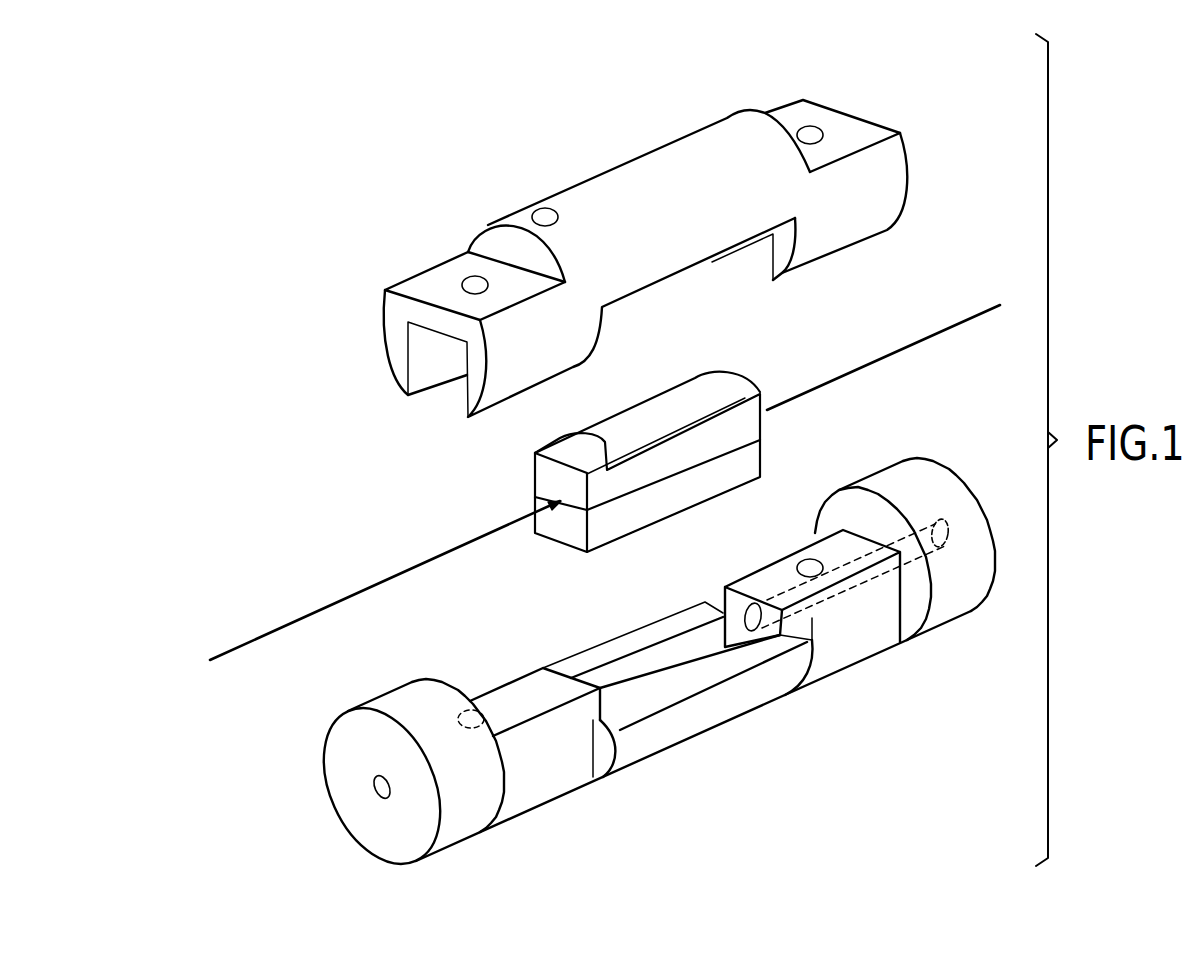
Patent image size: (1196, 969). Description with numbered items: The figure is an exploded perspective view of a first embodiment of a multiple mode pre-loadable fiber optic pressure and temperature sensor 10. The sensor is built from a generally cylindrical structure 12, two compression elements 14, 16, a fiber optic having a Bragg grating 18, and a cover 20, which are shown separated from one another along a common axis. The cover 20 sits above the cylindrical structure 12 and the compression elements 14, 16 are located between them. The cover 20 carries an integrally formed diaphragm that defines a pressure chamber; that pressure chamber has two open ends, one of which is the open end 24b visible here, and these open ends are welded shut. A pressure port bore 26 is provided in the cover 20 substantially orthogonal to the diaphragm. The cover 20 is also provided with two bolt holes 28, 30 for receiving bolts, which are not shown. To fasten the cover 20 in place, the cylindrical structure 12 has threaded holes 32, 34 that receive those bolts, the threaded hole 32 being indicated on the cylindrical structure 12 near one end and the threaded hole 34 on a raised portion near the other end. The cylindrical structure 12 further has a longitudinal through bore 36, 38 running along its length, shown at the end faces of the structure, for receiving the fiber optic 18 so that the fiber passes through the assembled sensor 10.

The multiple mode pre-loadable fiber optic pressure and temperature sensor 10 is at (509, 89).
The cylindrical structure 12 is at (823, 680).
The compression element 14 is at (685, 392).
The compression element 16 is at (748, 460).
The fiber optic having a Bragg grating 18 is at (302, 617).
The cover 20 is at (700, 146).
The open end of the pressure chamber 24b is at (498, 245).
The pressure port bore 26 is at (543, 214).
The bolt hole 28 is at (470, 283).
The bolt hole 30 is at (812, 127).
The threaded hole 32 is at (471, 710).
The threaded hole 34 is at (807, 565).
The longitudinal through bore 36 is at (380, 793).
The longitudinal through bore 38 is at (950, 522).